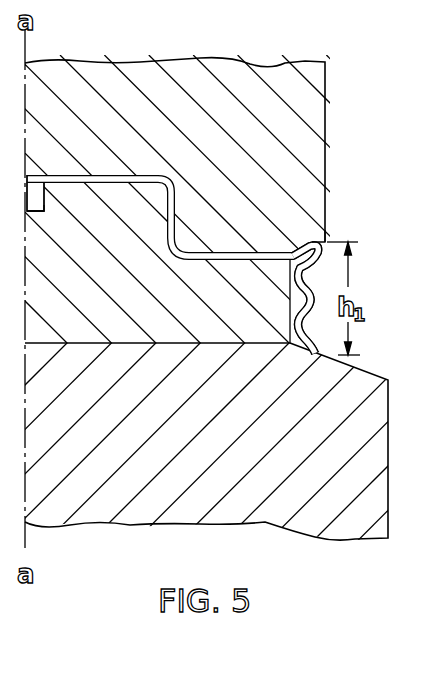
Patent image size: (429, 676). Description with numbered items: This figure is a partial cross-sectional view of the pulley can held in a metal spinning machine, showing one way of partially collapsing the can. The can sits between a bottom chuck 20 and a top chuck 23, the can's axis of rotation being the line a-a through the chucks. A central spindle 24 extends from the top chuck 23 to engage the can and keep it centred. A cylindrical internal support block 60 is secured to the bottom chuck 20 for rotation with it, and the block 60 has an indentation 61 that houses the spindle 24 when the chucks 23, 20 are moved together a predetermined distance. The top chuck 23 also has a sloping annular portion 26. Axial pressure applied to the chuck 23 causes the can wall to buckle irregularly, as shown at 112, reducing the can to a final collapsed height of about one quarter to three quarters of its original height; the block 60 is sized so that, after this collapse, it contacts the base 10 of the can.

The base 10 is at (166, 178).
The bottom chuck 20 is at (167, 451).
The top chuck 23 is at (167, 126).
The central spindle 24 is at (32, 184).
The sloping annular portion 26 is at (312, 246).
The cylindrical internal support block 60 is at (182, 283).
The indentation 61 is at (46, 210).
The buckled wall 112 is at (311, 291).